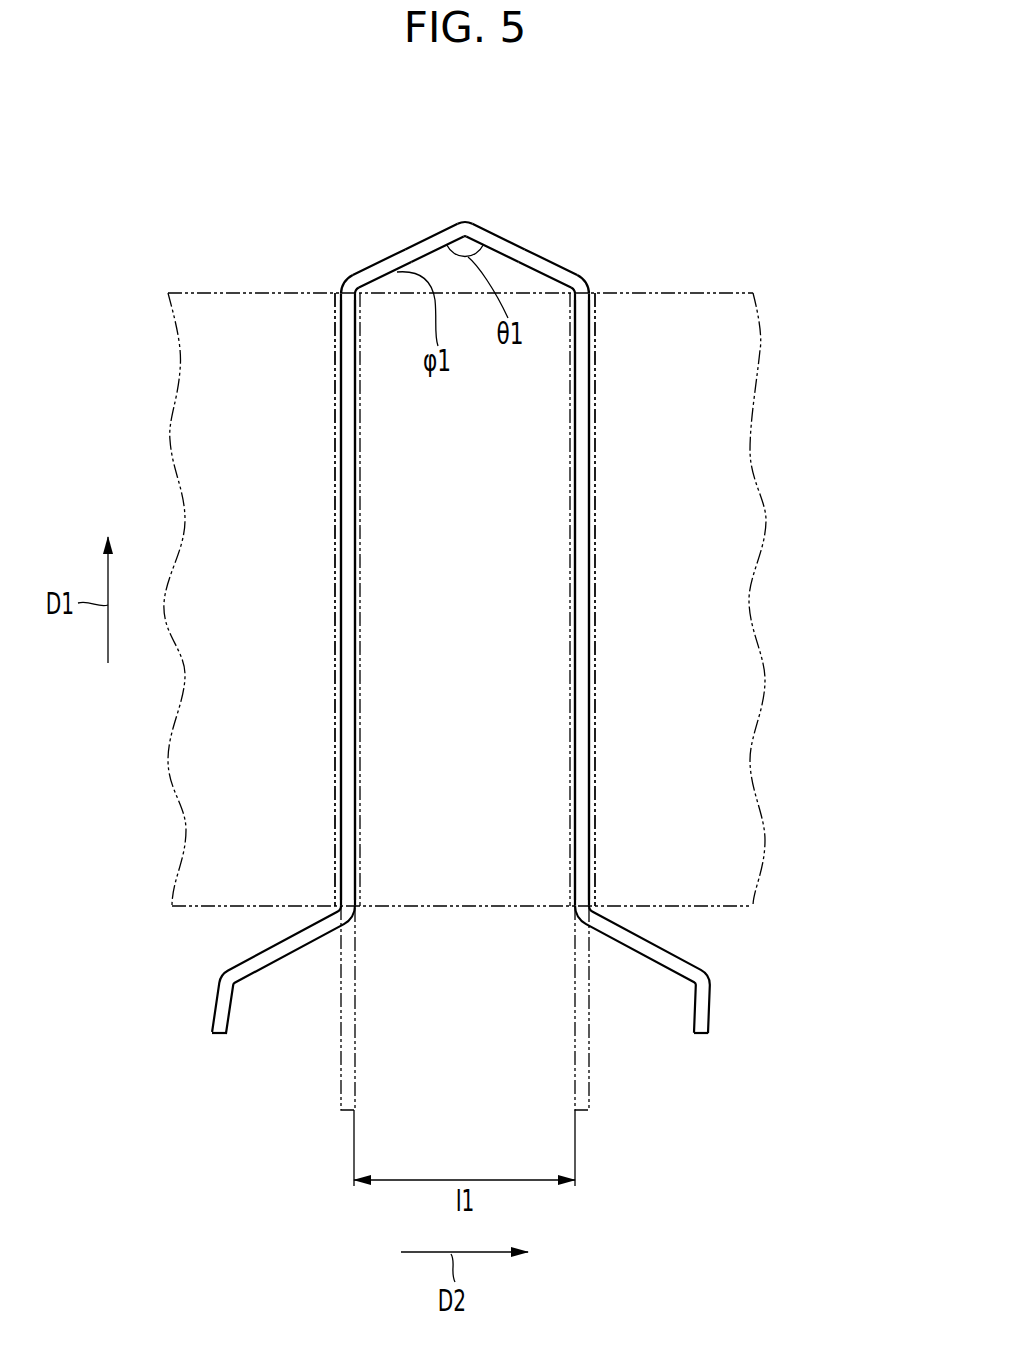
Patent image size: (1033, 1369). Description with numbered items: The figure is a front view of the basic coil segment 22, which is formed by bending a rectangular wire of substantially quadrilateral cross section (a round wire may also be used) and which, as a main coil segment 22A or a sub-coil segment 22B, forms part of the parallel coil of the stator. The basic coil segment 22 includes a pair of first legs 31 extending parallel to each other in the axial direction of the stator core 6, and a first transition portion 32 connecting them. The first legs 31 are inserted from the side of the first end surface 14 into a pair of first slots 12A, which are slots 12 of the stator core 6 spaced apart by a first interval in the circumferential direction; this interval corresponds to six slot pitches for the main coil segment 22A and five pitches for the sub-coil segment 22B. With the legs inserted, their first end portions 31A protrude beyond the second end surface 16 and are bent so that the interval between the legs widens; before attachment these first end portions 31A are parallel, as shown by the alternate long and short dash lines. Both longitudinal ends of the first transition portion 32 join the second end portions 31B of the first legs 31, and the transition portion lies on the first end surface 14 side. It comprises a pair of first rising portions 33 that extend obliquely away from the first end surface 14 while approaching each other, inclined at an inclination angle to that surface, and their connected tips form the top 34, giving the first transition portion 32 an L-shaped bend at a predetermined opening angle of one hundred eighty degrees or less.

The basic coil segment 22 is at (478, 594).
The main coil segment 22A is at (268, 111).
The sub-coil segment 22B is at (328, 111).
The stator core 6 is at (190, 288).
The first end surface 14 is at (725, 292).
The slot 12 is at (464, 599).
The first slot 12A is at (335, 452).
The second end surface 16 is at (720, 908).
The first leg 31 is at (340, 607).
The first end portion 31A is at (276, 945).
The second end portion 31B is at (336, 299).
The first transition portion 32 is at (376, 257).
The first rising portion 33 is at (415, 240).
The top 34 is at (465, 219).